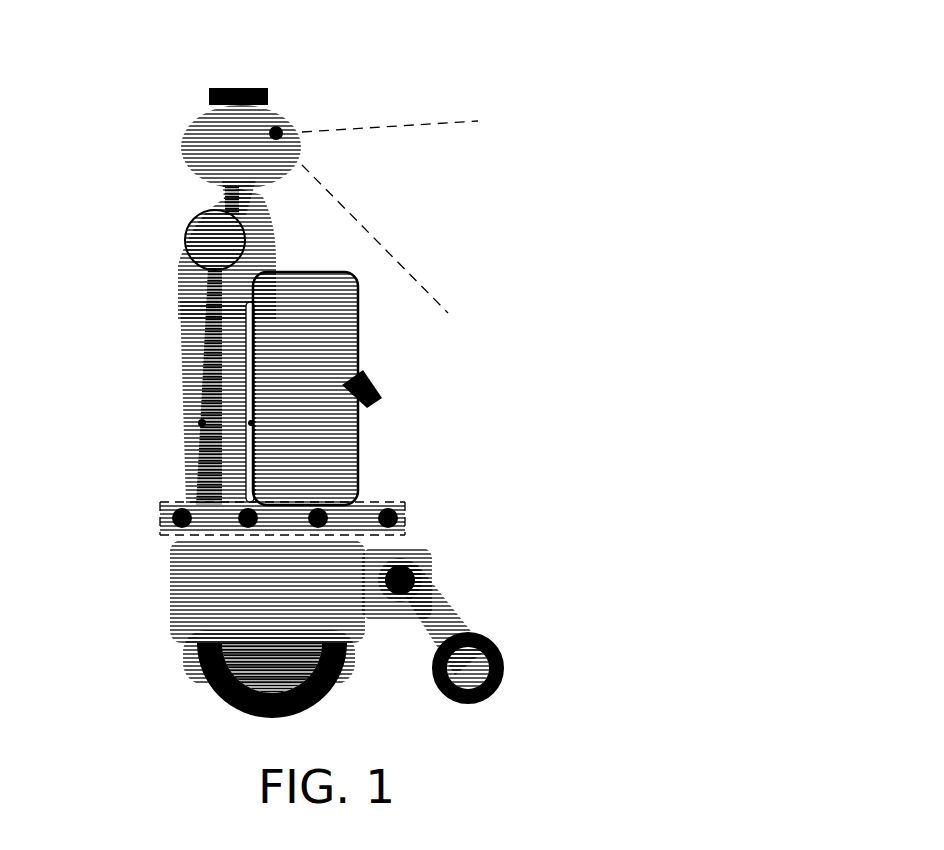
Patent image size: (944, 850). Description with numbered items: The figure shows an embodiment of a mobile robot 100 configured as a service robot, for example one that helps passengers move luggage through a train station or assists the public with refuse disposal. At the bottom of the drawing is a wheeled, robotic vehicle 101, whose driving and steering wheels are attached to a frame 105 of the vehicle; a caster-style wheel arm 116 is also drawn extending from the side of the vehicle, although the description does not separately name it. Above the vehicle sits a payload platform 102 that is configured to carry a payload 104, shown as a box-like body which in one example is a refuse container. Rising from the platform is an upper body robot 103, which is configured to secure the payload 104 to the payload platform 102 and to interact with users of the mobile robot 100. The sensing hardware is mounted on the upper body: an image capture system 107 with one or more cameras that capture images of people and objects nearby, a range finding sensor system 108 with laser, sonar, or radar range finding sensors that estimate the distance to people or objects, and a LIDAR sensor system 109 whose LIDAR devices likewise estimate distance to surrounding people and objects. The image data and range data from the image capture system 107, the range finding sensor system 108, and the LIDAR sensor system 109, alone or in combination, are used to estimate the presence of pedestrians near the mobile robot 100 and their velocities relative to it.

The mobile robot 100 is at (558, 68).
The wheeled, robotic vehicle 101 is at (153, 530).
The payload platform 102 is at (357, 520).
The upper body robot 103 is at (153, 102).
The payload 104 is at (318, 419).
The frame 105 is at (377, 603).
The image capture system 107 is at (277, 128).
The range finding sensor system 108 is at (397, 509).
The LIDAR sensor system 109 is at (268, 88).
The caster wheel arm 116 is at (430, 608).